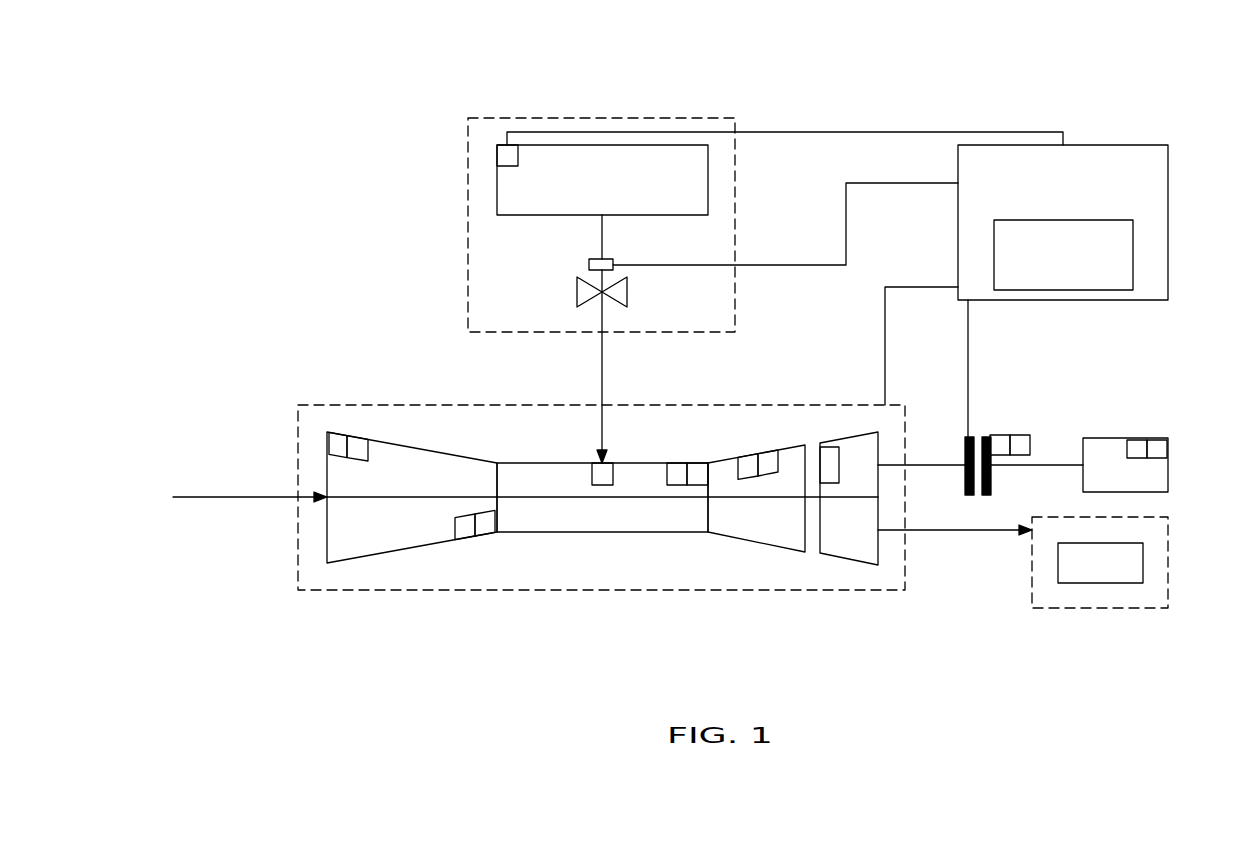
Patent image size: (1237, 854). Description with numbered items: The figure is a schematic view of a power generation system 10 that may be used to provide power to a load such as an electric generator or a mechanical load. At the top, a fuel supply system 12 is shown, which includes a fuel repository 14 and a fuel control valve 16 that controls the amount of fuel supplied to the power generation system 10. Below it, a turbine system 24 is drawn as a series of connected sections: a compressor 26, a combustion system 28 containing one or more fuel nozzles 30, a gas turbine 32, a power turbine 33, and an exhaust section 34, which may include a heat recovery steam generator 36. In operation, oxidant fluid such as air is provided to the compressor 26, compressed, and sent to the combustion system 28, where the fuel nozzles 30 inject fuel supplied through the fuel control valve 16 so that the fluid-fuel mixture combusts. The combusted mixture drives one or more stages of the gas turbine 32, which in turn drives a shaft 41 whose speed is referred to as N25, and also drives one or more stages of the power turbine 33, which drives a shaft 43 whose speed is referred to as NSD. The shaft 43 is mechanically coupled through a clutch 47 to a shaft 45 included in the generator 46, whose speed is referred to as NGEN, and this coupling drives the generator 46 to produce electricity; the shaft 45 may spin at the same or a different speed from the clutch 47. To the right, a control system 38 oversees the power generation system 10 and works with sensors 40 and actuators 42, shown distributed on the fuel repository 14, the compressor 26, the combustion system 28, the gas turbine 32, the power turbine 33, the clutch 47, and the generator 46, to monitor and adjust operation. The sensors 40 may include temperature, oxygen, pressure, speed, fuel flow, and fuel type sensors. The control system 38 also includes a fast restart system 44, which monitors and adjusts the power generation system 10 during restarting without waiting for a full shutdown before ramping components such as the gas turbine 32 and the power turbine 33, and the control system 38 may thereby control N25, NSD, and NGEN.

The power generation system 10 is at (322, 66).
The fuel supply system 12 is at (603, 118).
The fuel repository 14 is at (708, 180).
The fuel control valve 16 is at (577, 292).
The turbine system 24 is at (298, 450).
The compressor 26 is at (410, 447).
The combustion system 28 is at (600, 532).
The fuel nozzle 30 is at (592, 475).
The gas turbine 32 is at (753, 542).
The power turbine 33 is at (843, 440).
The exhaust section 34 is at (1032, 560).
The heat recovery steam generator 36 is at (1143, 560).
The control system 38 is at (958, 225).
The sensor 40 is at (497, 155).
The shaft 41 is at (783, 500).
The actuator 42 is at (358, 437).
The shaft 43 is at (925, 465).
The fast restart system 44 is at (1133, 245).
The shaft 45 is at (1040, 458).
The generator 46 is at (1168, 477).
The clutch 47 is at (983, 437).